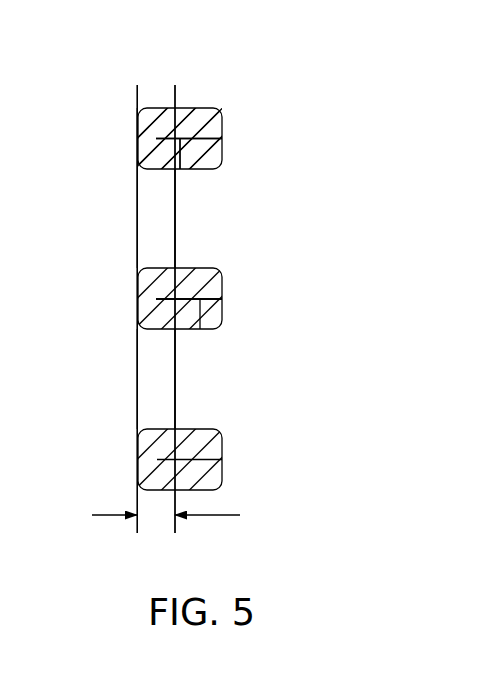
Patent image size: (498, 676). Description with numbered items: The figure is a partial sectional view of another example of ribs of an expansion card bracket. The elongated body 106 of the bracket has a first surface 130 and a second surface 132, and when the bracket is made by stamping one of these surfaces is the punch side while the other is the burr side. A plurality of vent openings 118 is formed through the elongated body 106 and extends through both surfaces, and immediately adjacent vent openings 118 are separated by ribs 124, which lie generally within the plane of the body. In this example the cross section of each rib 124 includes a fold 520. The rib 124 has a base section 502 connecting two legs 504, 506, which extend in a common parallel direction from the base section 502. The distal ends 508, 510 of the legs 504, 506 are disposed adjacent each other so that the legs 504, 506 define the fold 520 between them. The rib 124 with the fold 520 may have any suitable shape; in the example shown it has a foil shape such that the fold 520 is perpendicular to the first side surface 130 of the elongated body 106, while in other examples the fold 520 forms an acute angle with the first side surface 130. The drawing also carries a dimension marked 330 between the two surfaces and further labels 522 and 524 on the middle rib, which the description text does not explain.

The elongated body 106 is at (135, 185).
The vent openings 118 is at (158, 228).
The ribs 124 is at (226, 122).
The first surface 130 is at (137, 105).
The second surface 132 is at (175, 97).
The width dimension 330 is at (193, 515).
The base section 502 is at (145, 128).
The leg 504 is at (197, 123).
The leg 506 is at (189, 162).
The distal end 508 is at (223, 123).
The distal end 510 is at (223, 148).
The fold 520 is at (180, 169).
The left interface 522 is at (138, 299).
The right interface 524 is at (222, 299).